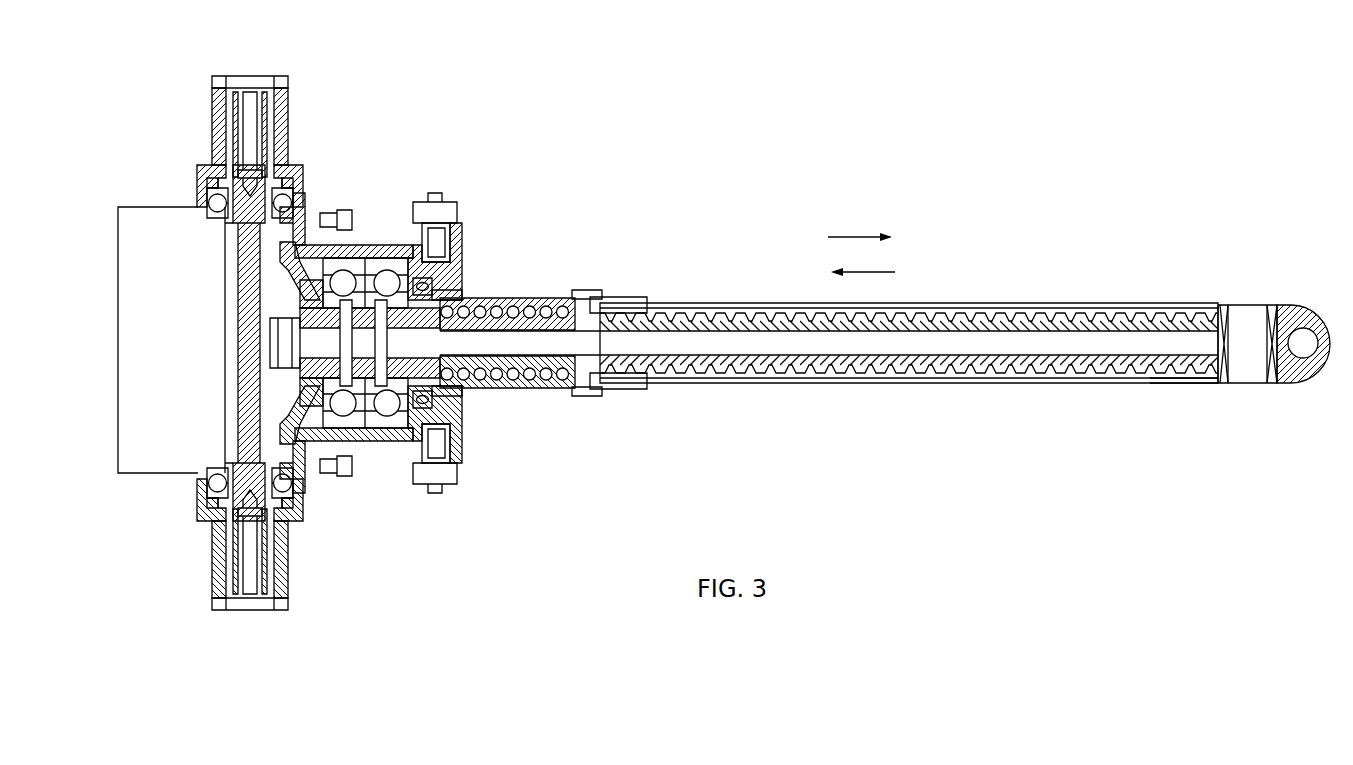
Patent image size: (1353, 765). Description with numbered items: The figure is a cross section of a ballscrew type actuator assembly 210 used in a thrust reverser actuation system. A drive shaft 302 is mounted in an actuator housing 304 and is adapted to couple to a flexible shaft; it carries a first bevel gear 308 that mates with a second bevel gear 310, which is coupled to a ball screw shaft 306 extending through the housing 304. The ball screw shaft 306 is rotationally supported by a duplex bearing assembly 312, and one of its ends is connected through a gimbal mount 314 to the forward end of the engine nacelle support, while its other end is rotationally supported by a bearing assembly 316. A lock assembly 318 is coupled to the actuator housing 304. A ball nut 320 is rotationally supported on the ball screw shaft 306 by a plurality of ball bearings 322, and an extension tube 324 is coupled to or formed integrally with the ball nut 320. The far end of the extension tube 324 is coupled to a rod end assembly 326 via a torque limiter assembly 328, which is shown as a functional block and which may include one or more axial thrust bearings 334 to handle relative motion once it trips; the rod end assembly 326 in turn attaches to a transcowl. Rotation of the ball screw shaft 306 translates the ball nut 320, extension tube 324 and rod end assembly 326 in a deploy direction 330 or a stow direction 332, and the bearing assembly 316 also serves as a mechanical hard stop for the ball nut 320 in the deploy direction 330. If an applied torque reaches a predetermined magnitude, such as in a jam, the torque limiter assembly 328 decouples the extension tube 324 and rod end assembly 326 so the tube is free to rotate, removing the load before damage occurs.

The actuator assembly 210 is at (701, 97).
The drive shaft 302 is at (290, 578).
The actuator housing 304 is at (292, 105).
The ball screw shaft 306 is at (832, 380).
The first bevel gear 308 is at (255, 430).
The second bevel gear 310 is at (273, 262).
The duplex bearing assembly 312 is at (375, 448).
The gimbal mount 314 is at (447, 197).
The bearing assembly 316 is at (1190, 383).
The lock assembly 318 is at (120, 420).
The ball nut 320 is at (540, 298).
The ball bearings 322 is at (540, 385).
The extension tube 324 is at (695, 303).
The rod end assembly 326 is at (1300, 305).
The torque limiter assembly 328 is at (1243, 290).
The deploy direction 330 is at (840, 237).
The stow direction 332 is at (873, 272).
The axial thrust bearings 334 is at (1222, 385).